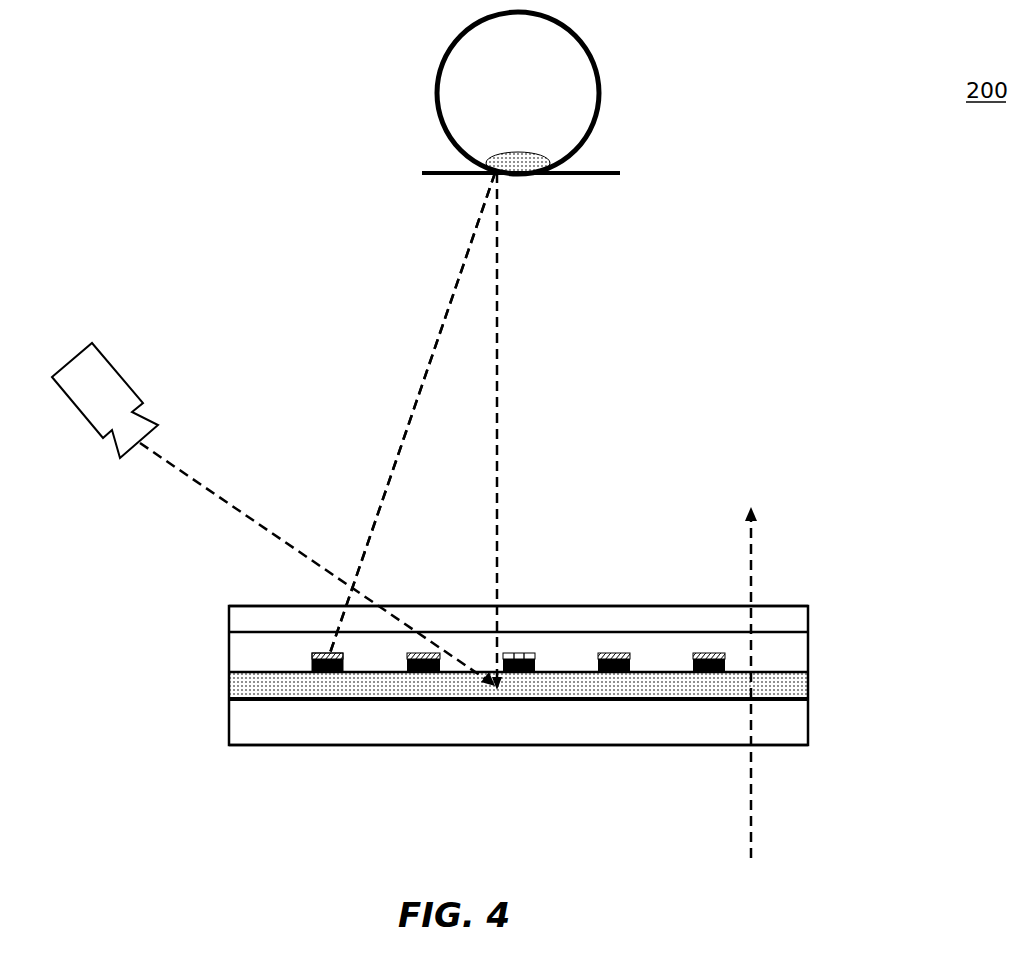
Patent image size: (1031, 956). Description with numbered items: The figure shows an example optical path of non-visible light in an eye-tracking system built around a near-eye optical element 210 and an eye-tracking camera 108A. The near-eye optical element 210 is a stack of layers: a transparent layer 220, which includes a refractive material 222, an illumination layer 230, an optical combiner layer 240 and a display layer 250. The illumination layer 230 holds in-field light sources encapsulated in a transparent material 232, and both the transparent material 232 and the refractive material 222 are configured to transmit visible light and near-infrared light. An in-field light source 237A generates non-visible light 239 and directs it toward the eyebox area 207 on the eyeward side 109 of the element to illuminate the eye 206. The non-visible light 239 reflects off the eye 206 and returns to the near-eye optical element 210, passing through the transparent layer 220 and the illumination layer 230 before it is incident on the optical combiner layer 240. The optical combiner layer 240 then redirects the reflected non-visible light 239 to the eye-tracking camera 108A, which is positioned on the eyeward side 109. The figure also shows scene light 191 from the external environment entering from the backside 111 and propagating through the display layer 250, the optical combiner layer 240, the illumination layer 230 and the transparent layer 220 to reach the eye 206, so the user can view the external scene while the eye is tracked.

The eye 206 is at (593, 63).
The eyebox area 207 is at (620, 173).
The eye-tracking camera 108A is at (105, 366).
The eyeward side 109 is at (722, 427).
The backside 111 is at (328, 793).
The scene light 191 is at (753, 696).
The near-eye optical element 210 is at (205, 606).
The transparent layer 220 is at (820, 606).
The refractive material 222 is at (703, 626).
The illumination layer 230 is at (820, 632).
The transparent material 232 is at (676, 661).
The in-field light source 237A is at (345, 668).
The non-visible light 239 is at (390, 472).
The optical combiner layer 240 is at (820, 672).
The display layer 250 is at (820, 745).